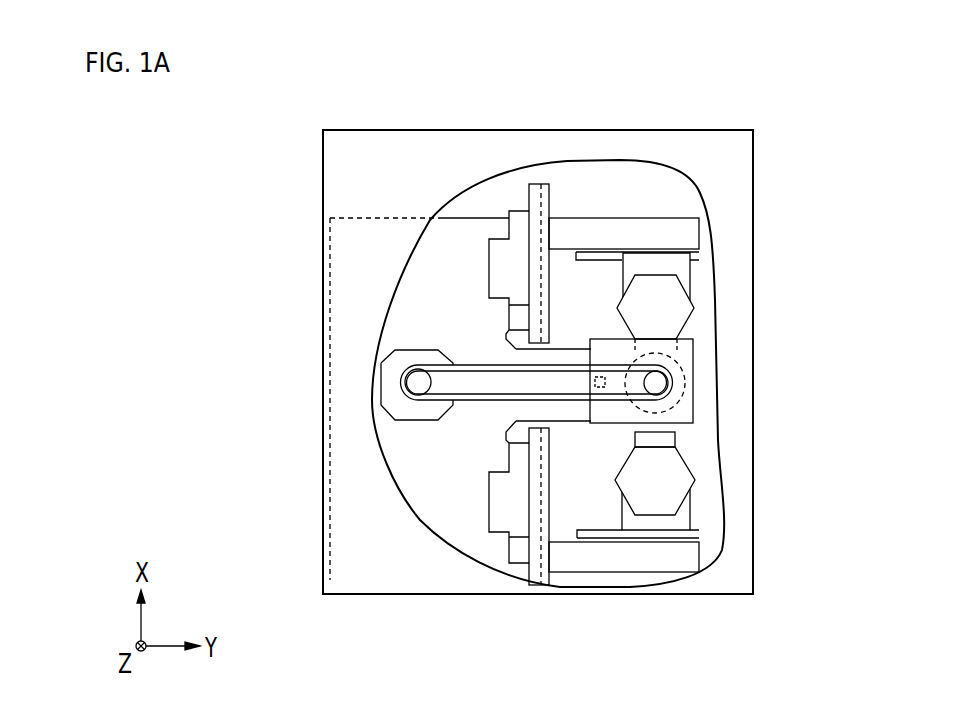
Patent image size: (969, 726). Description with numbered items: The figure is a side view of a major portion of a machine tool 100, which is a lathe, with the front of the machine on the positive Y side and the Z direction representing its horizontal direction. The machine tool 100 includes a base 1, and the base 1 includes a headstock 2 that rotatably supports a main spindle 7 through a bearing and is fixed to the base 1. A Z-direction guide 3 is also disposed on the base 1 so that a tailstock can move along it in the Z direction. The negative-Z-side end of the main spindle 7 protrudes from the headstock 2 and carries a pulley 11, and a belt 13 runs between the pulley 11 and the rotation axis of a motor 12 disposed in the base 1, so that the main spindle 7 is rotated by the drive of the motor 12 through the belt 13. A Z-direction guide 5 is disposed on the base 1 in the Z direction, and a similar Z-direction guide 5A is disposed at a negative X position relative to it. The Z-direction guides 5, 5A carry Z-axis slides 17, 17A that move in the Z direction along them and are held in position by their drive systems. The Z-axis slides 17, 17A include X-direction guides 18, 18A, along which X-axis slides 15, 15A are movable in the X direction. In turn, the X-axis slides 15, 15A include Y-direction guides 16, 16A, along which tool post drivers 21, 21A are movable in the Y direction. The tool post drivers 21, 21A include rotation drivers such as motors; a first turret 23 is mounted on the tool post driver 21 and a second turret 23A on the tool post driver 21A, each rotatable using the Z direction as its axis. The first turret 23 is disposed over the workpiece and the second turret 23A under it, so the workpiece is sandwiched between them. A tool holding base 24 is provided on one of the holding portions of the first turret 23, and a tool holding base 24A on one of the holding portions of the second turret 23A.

The machine tool 100 is at (820, 102).
The base 1 is at (455, 230).
The headstock 2 is at (690, 410).
The Z-direction guide 3 is at (594, 423).
The Z-direction guide 5 is at (502, 250).
The Z-direction guide 5A is at (502, 513).
The main spindle 7 is at (698, 432).
The pulley 11 is at (658, 383).
The motor 12 is at (385, 398).
The belt 13 is at (473, 398).
The X-axis slide 15 is at (672, 223).
The X-axis slide 15A is at (692, 565).
The Y-direction guide 16 is at (607, 252).
The Y-direction guide 16A is at (612, 533).
The Z-axis slide 17 is at (532, 183).
The Z-axis slide 17A is at (537, 567).
The X-direction guide 18 is at (543, 183).
The X-direction guide 18A is at (541, 585).
The tool post driver 21 is at (682, 272).
The tool post driver 21A is at (683, 522).
The first turret 23 is at (675, 292).
The second turret 23A is at (673, 502).
The tool holding base 24 is at (675, 350).
The tool holding base 24A is at (674, 438).